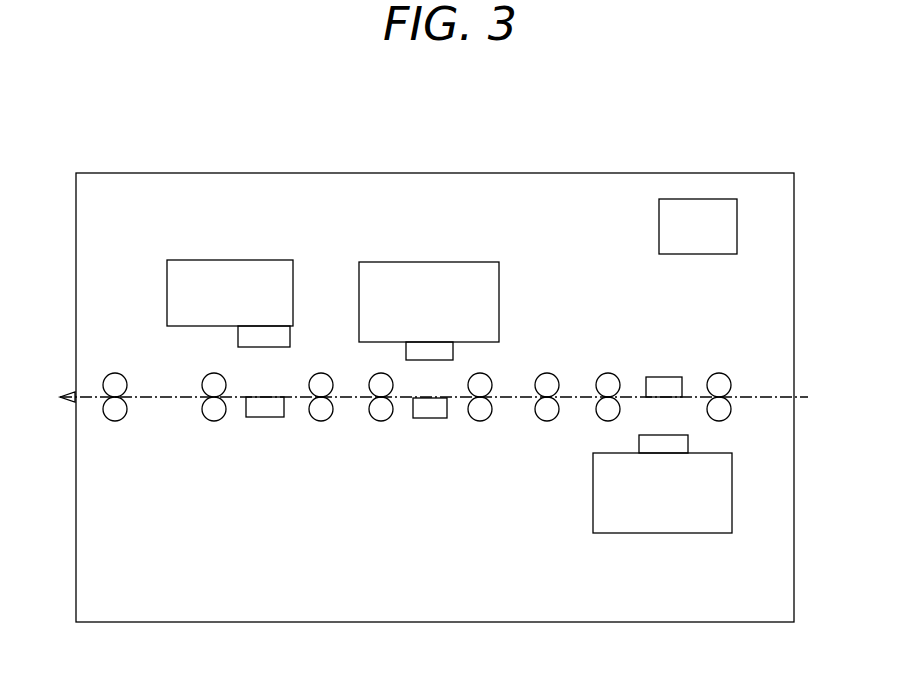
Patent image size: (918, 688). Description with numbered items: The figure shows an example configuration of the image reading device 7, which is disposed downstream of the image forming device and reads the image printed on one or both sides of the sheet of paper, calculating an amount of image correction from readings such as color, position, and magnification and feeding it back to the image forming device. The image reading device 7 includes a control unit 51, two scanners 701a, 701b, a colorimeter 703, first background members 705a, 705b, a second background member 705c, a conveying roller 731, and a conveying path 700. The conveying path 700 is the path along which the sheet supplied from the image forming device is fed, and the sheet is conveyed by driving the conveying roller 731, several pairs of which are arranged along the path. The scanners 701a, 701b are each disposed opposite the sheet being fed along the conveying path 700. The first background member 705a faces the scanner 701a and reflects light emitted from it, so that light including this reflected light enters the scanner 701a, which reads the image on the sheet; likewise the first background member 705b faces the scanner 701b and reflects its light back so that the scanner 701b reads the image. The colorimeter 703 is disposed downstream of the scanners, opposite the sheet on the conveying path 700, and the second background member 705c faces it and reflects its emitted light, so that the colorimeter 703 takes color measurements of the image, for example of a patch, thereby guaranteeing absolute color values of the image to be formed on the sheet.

The image reading device 7 is at (455, 162).
The conveying path 700 is at (155, 400).
The colorimeter 703 is at (220, 275).
The scanner 701b is at (377, 273).
The scanner 701a is at (666, 525).
The control unit 51 is at (659, 226).
The first background member 705a is at (660, 384).
The first background member 705b is at (433, 415).
The second background member 705c is at (272, 410).
The conveying roller 731 is at (130, 380).